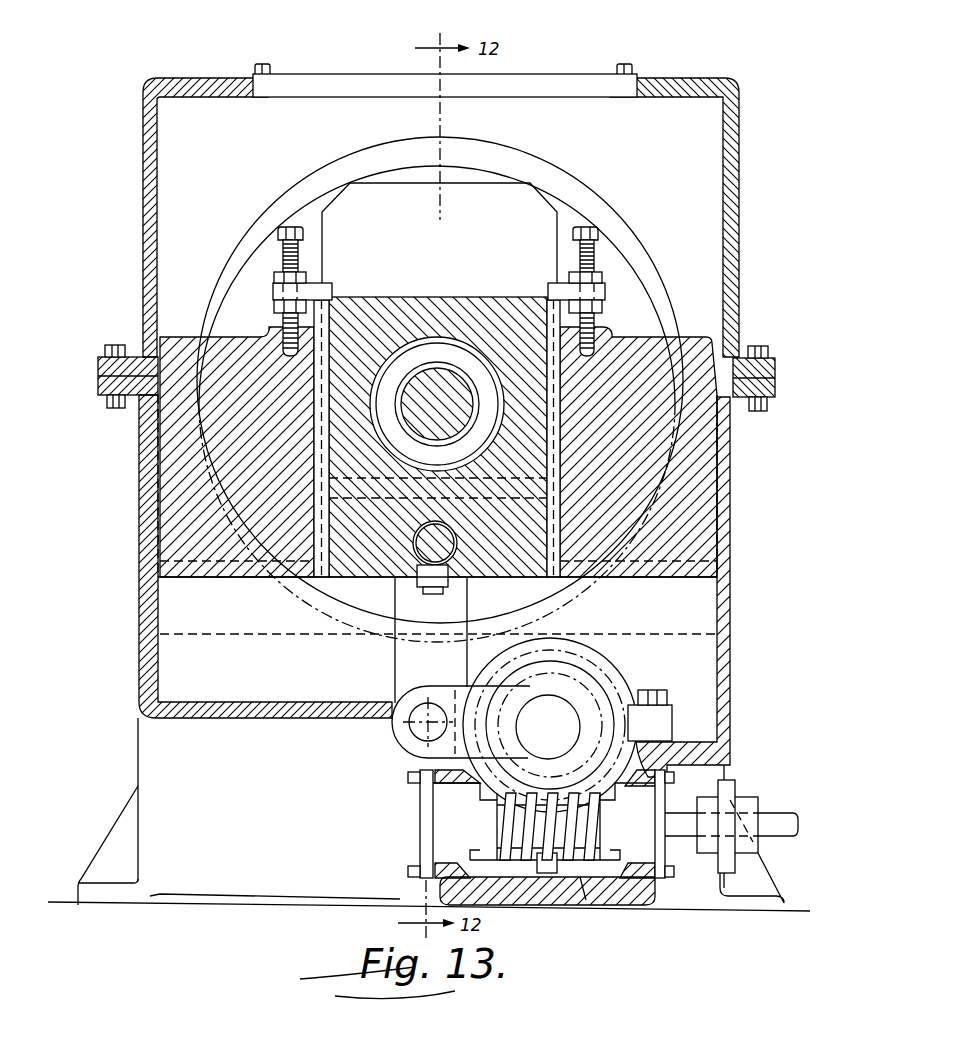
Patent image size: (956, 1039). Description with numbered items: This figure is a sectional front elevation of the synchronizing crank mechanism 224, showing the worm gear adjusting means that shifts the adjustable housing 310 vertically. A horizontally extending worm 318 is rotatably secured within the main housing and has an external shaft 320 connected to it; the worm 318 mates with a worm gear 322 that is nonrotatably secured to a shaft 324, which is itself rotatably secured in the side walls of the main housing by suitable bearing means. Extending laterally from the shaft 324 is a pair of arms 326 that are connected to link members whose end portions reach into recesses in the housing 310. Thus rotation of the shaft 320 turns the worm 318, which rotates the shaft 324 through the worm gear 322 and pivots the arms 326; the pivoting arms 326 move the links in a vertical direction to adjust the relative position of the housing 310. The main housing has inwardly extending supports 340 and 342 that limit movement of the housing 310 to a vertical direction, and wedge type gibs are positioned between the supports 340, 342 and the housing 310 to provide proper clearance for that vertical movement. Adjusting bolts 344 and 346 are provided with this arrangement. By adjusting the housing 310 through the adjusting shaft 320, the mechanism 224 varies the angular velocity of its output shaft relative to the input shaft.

The synchronizing crank mechanism 224 is at (756, 180).
The housing 310 is at (405, 335).
The worm 318 is at (583, 880).
The external shaft 320 is at (781, 823).
The worm gear 322 is at (585, 790).
The shaft 324 is at (570, 733).
The arms 326 is at (508, 690).
The support 340 is at (617, 442).
The support 342 is at (242, 447).
The adjusting bolt 344 is at (598, 262).
The adjusting bolt 346 is at (282, 257).